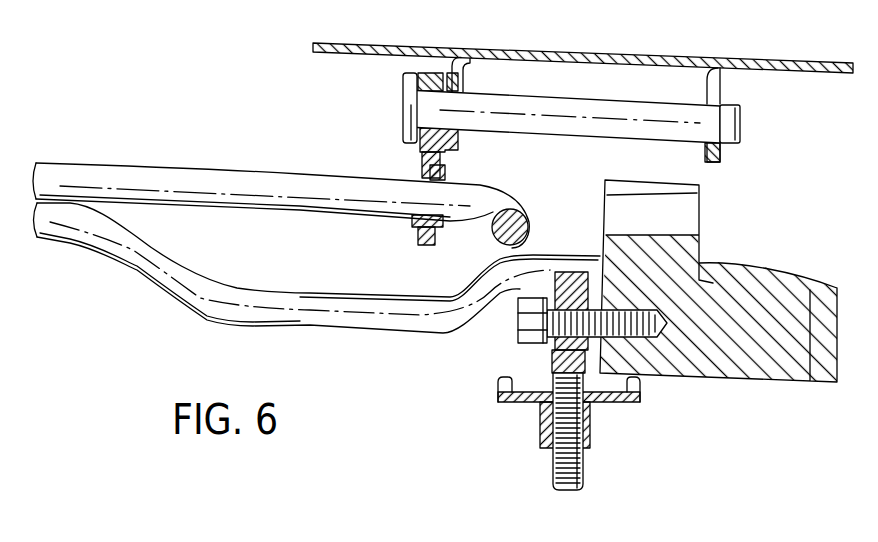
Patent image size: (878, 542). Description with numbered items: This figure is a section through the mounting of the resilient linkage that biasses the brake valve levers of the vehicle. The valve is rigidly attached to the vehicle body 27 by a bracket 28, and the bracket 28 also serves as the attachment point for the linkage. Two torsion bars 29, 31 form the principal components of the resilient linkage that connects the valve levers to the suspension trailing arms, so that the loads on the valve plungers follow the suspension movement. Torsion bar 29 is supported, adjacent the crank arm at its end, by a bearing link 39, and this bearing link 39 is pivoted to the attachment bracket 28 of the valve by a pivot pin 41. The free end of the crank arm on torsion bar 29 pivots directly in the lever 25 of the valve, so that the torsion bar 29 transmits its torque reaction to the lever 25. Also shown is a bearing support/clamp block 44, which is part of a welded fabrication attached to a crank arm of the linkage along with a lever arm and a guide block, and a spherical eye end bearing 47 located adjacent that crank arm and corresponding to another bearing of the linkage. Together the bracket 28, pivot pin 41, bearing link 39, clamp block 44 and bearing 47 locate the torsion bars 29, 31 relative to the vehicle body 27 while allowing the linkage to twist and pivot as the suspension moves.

The lever 25 is at (627, 402).
The vehicle body 27 is at (779, 61).
The bracket 28 is at (720, 82).
The torsion bar 29 is at (230, 313).
The torsion bar 31 is at (302, 183).
The bearing link 39 is at (440, 156).
The pivot pin 41 is at (405, 98).
The bearing support/clamp block 44 is at (757, 365).
The spherical eye end bearing 47 is at (553, 370).